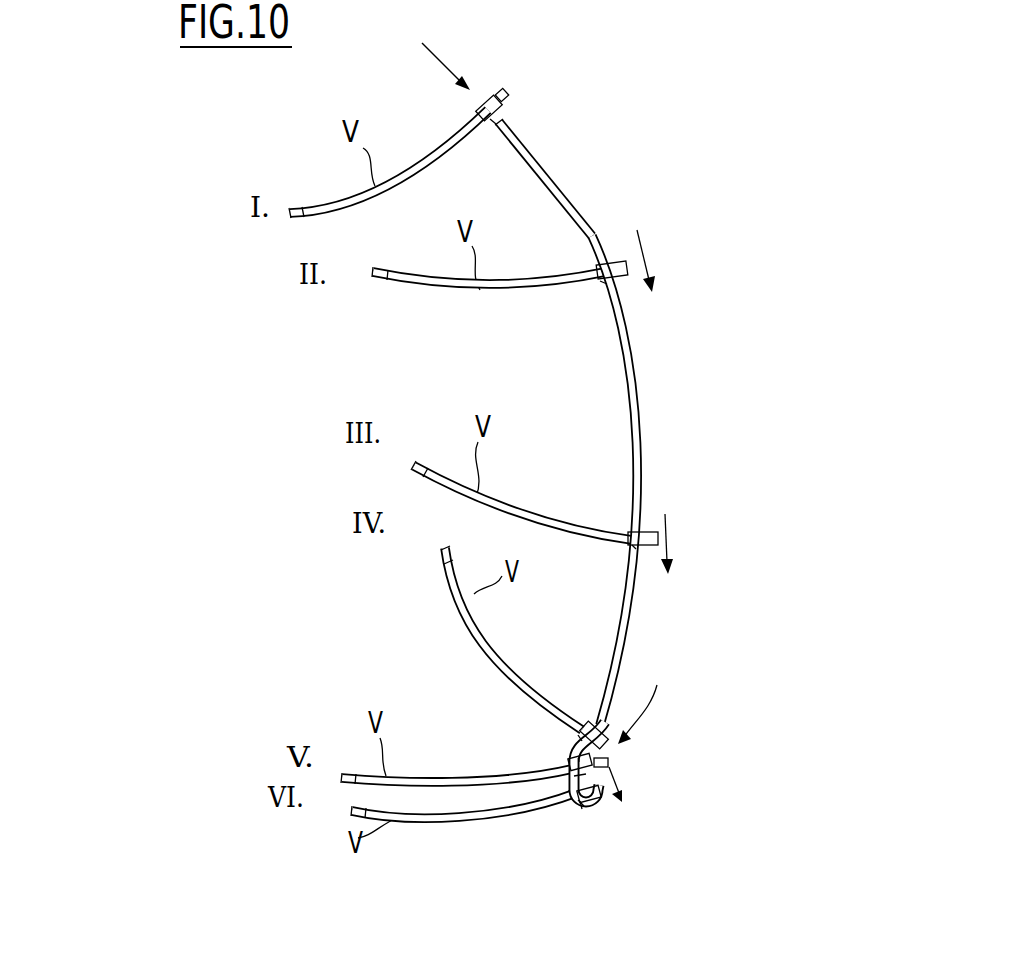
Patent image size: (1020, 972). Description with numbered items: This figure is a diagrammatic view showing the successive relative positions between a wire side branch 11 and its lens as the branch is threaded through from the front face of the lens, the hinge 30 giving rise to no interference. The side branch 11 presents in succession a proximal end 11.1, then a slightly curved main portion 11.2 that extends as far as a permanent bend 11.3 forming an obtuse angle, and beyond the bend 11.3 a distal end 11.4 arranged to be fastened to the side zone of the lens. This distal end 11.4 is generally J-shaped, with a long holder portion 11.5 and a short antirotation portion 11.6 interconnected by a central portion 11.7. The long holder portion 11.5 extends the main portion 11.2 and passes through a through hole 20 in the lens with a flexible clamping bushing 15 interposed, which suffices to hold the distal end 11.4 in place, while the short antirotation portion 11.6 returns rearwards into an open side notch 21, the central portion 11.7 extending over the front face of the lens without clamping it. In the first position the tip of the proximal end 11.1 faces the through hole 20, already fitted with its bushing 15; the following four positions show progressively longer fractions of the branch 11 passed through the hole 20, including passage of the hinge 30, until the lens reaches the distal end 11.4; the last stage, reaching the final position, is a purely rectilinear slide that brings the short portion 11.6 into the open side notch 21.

The side branch 11 is at (578, 493).
The proximal end 11.1 is at (532, 152).
The main portion 11.2 is at (642, 402).
The permanent bend 11.3 is at (574, 738).
The distal end 11.4 is at (582, 818).
The long holder portion 11.5 is at (574, 782).
The short antirotation portion 11.6 is at (606, 780).
The central portion 11.7 is at (602, 810).
The flexible clamping bushing 15 is at (492, 124).
The through hole 20 is at (480, 113).
The open side notch 21 is at (506, 94).
The hinge 30 is at (605, 715).